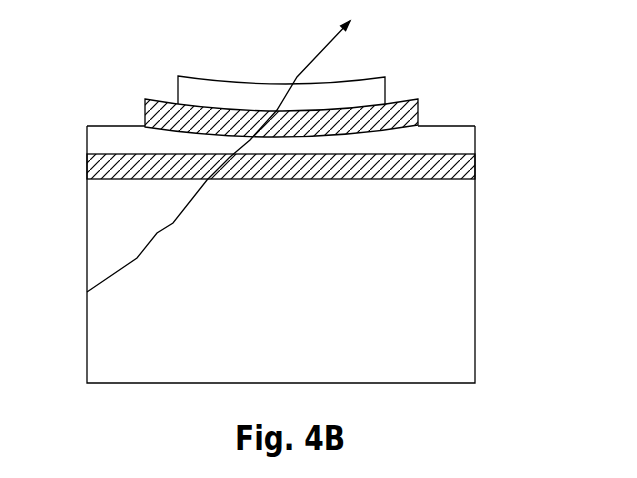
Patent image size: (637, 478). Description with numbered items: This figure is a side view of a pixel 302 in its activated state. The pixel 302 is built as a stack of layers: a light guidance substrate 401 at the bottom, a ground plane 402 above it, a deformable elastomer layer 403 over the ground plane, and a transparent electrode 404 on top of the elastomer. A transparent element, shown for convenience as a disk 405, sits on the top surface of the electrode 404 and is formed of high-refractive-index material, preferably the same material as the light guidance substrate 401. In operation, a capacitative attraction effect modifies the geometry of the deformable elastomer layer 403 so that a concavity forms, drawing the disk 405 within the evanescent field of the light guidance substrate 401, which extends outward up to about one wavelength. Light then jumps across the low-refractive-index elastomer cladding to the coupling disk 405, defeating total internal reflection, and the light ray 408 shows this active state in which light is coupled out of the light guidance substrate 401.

The pixel 302 is at (463, 41).
The light guidance substrate 401 is at (470, 255).
The ground plane 402 is at (475, 167).
The deformable elastomer layer 403 is at (475, 134).
The transparent electrode 404 is at (418, 104).
The disk 405 is at (385, 77).
The light ray 408 is at (137, 258).